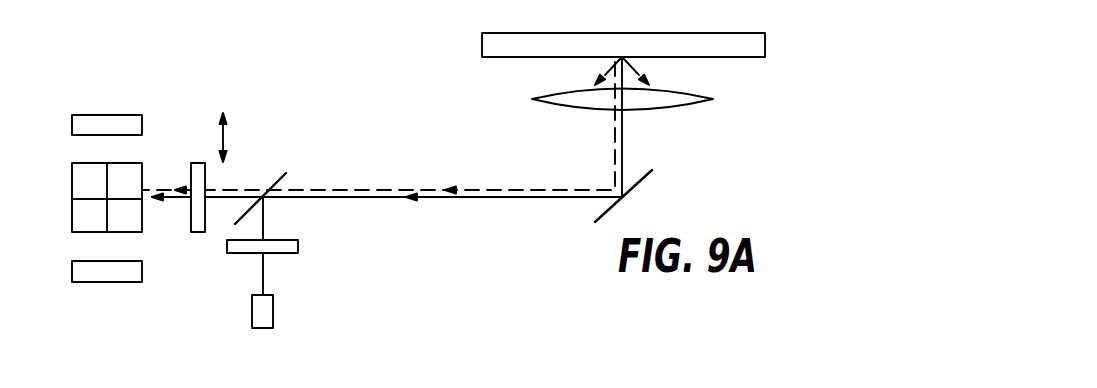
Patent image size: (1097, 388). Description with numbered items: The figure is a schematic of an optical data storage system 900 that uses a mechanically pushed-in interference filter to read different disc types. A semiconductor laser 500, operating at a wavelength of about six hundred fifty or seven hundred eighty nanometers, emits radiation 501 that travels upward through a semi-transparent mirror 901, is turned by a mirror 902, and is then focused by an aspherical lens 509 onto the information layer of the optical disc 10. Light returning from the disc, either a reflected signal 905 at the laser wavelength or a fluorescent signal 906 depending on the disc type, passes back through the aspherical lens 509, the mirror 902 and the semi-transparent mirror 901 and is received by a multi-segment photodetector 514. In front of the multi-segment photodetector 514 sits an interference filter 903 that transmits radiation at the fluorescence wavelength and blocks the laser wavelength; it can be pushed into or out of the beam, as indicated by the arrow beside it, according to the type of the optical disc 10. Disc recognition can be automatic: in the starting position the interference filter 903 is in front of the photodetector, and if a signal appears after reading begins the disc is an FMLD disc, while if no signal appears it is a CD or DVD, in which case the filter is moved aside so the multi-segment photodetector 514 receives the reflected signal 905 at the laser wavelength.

The optical disc 10 is at (460, 29).
The aspherical lens 509 is at (713, 99).
The reflected signal 905 is at (458, 199).
The fluorescent signal 906 is at (507, 163).
The mirror 902 is at (650, 178).
The semi-transparent mirror 901 is at (278, 172).
The interference filter 903 is at (198, 163).
The multi-segment photodetector 514 is at (72, 182).
The radiation 501 is at (263, 272).
The semiconductor laser 500 is at (273, 305).
The optical data storage system 900 is at (508, 260).